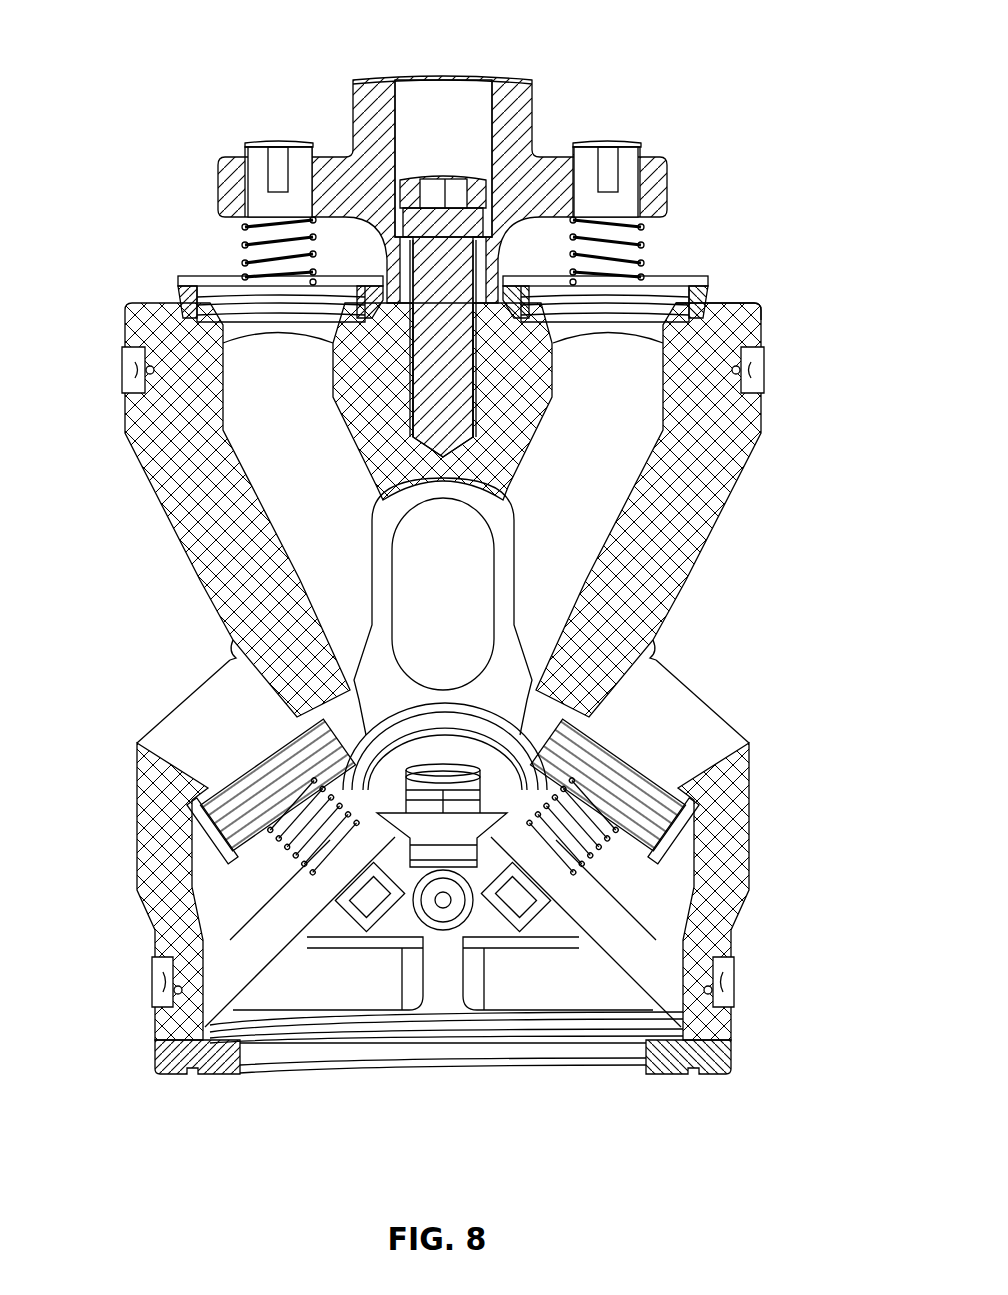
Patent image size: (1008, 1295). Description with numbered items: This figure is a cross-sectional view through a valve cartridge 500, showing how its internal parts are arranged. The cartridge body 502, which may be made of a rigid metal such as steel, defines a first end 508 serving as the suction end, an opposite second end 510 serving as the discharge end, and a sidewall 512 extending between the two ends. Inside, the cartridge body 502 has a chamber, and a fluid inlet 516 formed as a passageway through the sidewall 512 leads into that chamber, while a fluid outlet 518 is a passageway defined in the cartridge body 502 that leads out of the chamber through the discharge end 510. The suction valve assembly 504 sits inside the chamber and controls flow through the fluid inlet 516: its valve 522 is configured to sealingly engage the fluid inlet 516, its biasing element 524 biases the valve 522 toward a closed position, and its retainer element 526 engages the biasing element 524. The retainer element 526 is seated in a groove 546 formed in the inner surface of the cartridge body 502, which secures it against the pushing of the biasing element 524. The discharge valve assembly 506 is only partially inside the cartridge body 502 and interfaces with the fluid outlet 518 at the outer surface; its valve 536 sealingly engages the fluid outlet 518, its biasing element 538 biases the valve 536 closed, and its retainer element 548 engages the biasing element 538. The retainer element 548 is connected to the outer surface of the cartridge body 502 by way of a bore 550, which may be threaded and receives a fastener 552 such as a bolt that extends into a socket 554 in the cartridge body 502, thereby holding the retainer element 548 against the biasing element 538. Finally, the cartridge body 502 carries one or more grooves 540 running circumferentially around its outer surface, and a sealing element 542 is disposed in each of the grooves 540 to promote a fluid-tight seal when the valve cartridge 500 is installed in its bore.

The valve cartridge 500 is at (168, 26).
The cartridge body 502 is at (735, 800).
The suction valve assembly 504 is at (358, 968).
The discharge valve assembly 506 is at (308, 112).
The first end 508 is at (210, 1074).
The second end 510 is at (727, 305).
The sidewall 512 is at (173, 490).
The fluid inlet 516 is at (217, 700).
The fluid outlet 518 is at (262, 443).
The valve 522 is at (275, 742).
The biasing element 524 is at (287, 843).
The retainer element 526 is at (600, 937).
The valve 536 is at (205, 293).
The biasing element 538 is at (245, 248).
The grooves 540 is at (150, 366).
The sealing element 542 is at (128, 372).
The groove 546 is at (733, 1012).
The retainer element 548 is at (527, 138).
The bore 550 is at (462, 108).
The fastener 552 is at (418, 178).
The socket 554 is at (515, 445).